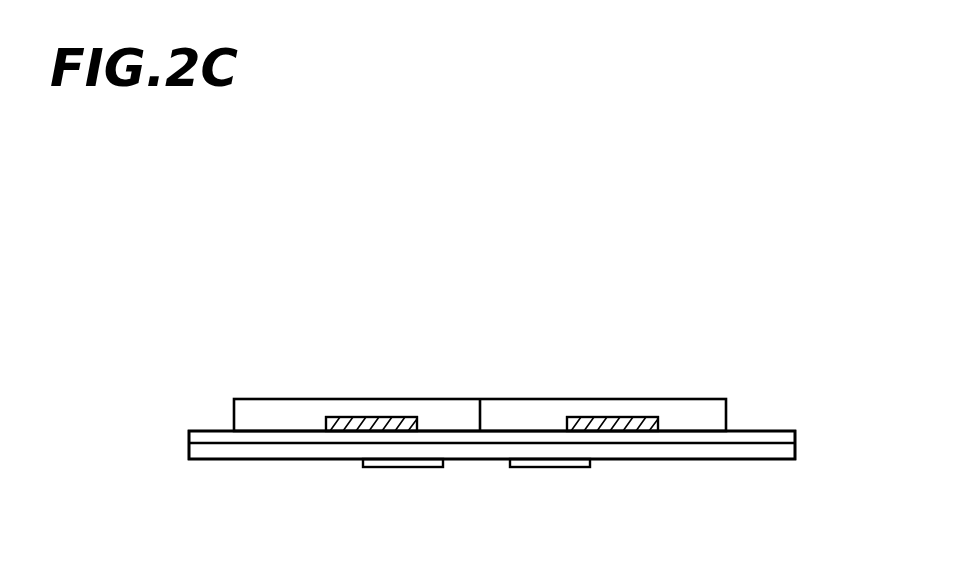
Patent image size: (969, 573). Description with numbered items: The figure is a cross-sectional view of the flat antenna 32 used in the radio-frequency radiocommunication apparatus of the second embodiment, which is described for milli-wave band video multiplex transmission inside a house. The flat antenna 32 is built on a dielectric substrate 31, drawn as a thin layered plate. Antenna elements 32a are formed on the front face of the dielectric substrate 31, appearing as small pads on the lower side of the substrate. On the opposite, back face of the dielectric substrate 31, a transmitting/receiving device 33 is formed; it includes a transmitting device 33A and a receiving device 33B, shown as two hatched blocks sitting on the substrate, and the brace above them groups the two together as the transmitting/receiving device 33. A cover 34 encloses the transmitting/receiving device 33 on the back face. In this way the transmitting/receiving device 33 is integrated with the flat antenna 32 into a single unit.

The dielectric substrate 31 is at (800, 430).
The flat antenna 32 is at (190, 417).
The antenna elements 32a is at (552, 467).
The transmitting/receiving device 33 is at (630, 288).
The transmitting device 33A is at (402, 417).
The receiving device 33B is at (578, 412).
The cover 34 is at (292, 398).